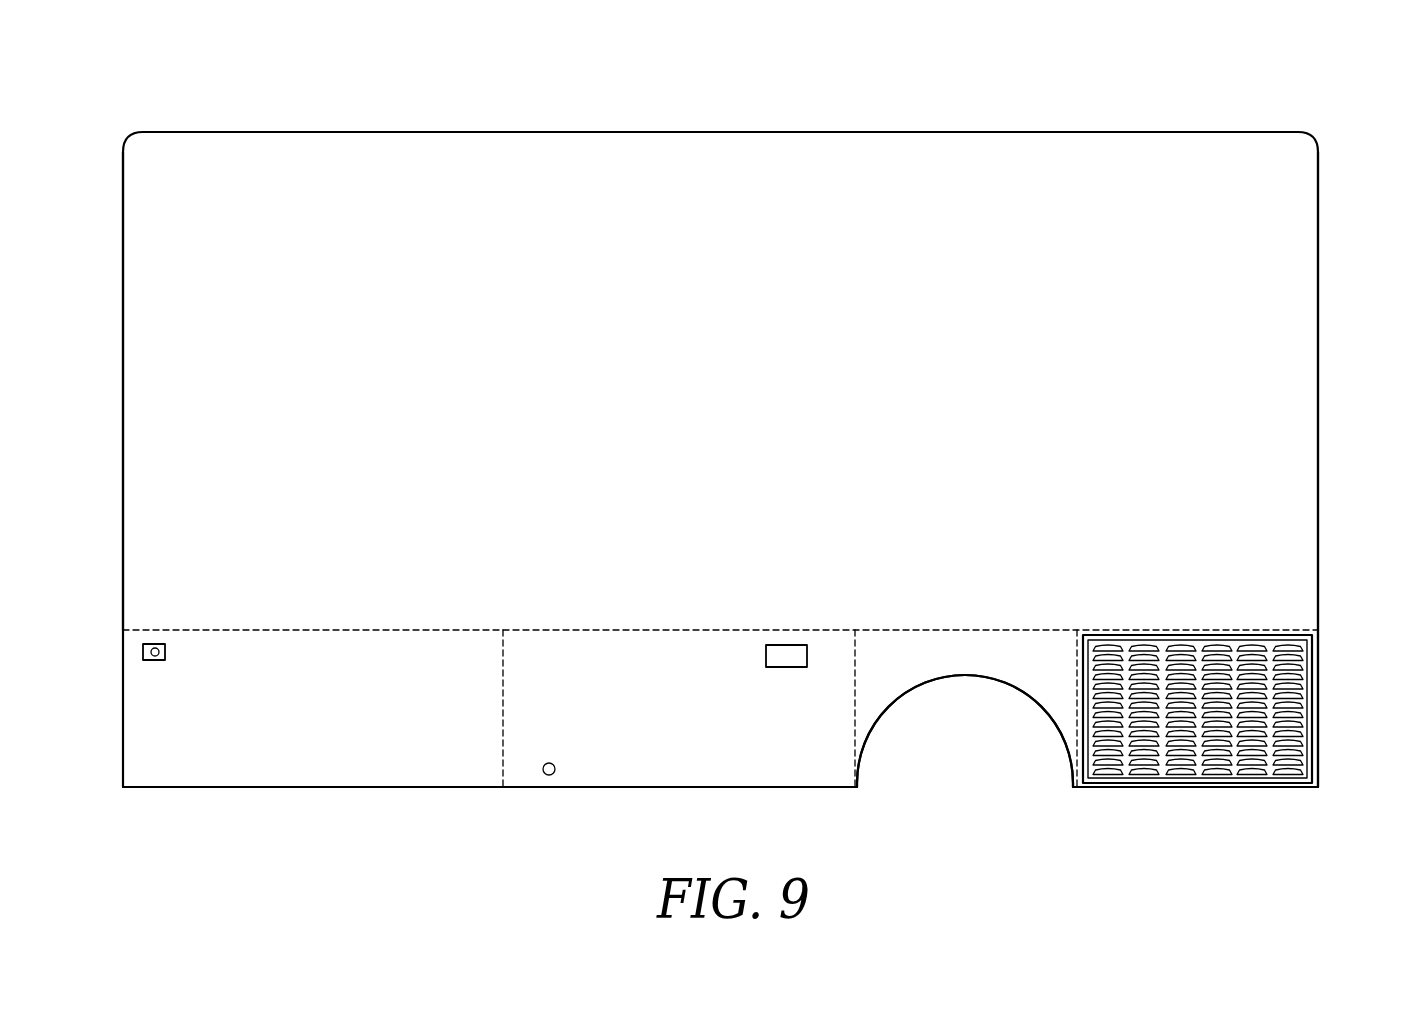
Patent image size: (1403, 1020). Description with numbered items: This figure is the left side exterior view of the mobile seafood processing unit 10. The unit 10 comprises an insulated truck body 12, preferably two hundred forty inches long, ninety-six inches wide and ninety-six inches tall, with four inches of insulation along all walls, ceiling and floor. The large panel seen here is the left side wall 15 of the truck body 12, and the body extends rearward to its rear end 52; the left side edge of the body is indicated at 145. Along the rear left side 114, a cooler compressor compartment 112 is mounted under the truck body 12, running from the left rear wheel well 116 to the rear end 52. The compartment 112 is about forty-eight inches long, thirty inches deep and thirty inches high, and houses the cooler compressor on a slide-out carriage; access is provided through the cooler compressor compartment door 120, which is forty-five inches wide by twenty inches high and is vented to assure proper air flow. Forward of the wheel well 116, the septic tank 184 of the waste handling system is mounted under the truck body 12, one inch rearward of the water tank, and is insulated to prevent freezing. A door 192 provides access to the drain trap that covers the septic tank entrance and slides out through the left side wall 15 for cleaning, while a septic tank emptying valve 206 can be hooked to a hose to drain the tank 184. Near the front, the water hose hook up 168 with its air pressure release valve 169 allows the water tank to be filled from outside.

The mobile seafood processing unit 10 is at (824, 113).
The insulated truck body 12 is at (1113, 152).
The left side wall 15 is at (668, 364).
The rear end 52 is at (1319, 409).
The side edge 145 is at (132, 530).
The rear left side 114 is at (1302, 582).
The water hose hook up 168 is at (151, 645).
The air pressure release valve 169 is at (160, 661).
The septic tank 184 is at (690, 718).
The door 192 is at (790, 644).
The septic tank emptying valve 206 is at (552, 762).
The left rear wheel well 116 is at (957, 732).
The cooler compressor compartment door 120 is at (1153, 647).
The cooler compressor compartment 112 is at (1295, 785).